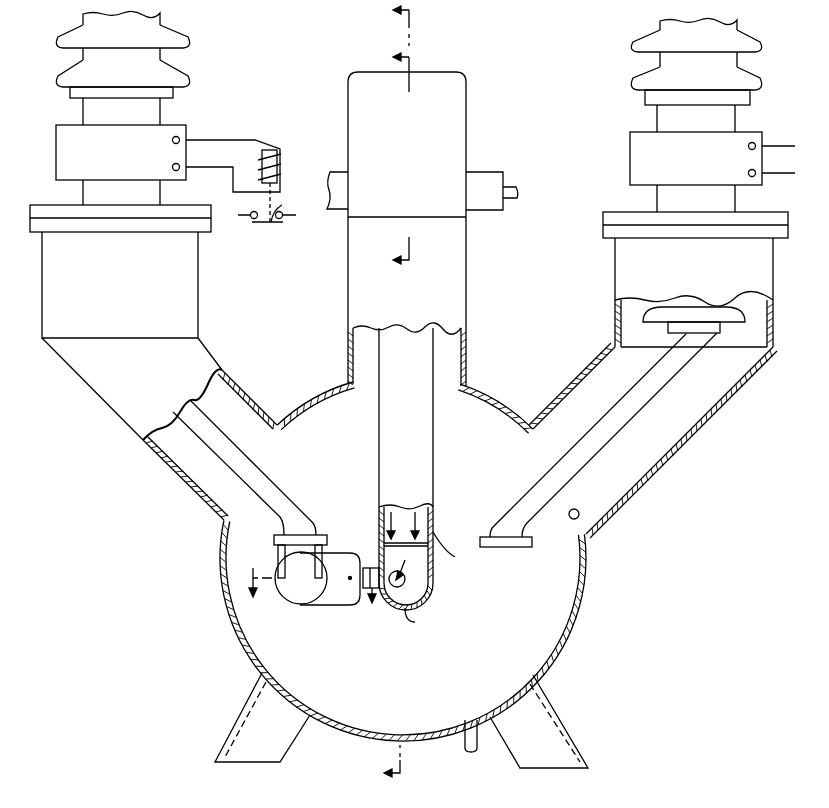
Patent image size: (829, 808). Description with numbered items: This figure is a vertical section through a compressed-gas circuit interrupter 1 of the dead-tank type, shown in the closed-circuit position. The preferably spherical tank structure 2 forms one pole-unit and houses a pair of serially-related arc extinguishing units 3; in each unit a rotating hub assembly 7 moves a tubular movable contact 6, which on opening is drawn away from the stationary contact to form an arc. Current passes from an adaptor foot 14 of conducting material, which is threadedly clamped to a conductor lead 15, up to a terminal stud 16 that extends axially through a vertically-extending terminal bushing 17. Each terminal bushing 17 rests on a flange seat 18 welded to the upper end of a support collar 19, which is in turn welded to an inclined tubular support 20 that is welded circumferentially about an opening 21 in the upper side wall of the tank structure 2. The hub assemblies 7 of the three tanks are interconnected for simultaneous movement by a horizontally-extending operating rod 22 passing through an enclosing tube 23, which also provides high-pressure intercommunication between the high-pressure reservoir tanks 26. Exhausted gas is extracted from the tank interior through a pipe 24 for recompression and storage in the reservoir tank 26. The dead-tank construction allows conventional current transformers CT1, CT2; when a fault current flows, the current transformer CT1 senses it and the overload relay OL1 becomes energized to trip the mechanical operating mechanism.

The compressed-gas circuit interrupter 1 is at (506, 79).
The tank structure 2 is at (590, 556).
The arc extinguishing unit 3 is at (336, 607).
The tubular movable contact 6 is at (372, 568).
The hub assembly 7 is at (433, 471).
The adaptor foot 14 is at (300, 599).
The conductor lead 15 is at (270, 480).
The terminal stud 16 is at (705, 334).
The terminal bushing 17 is at (62, 73).
The flange seat 18 is at (211, 228).
The support collar 19 is at (198, 282).
The inclined tubular support 20 is at (101, 400).
The opening 21 is at (590, 522).
The operating rod 22 is at (508, 187).
The enclosing tube 23 is at (337, 172).
The pipe 24 is at (465, 748).
The high-pressure reservoir tank 26 is at (466, 305).
The current transformer CT1 is at (175, 125).
The current transformer CT2 is at (640, 132).
The overload relay OL1 is at (251, 181).